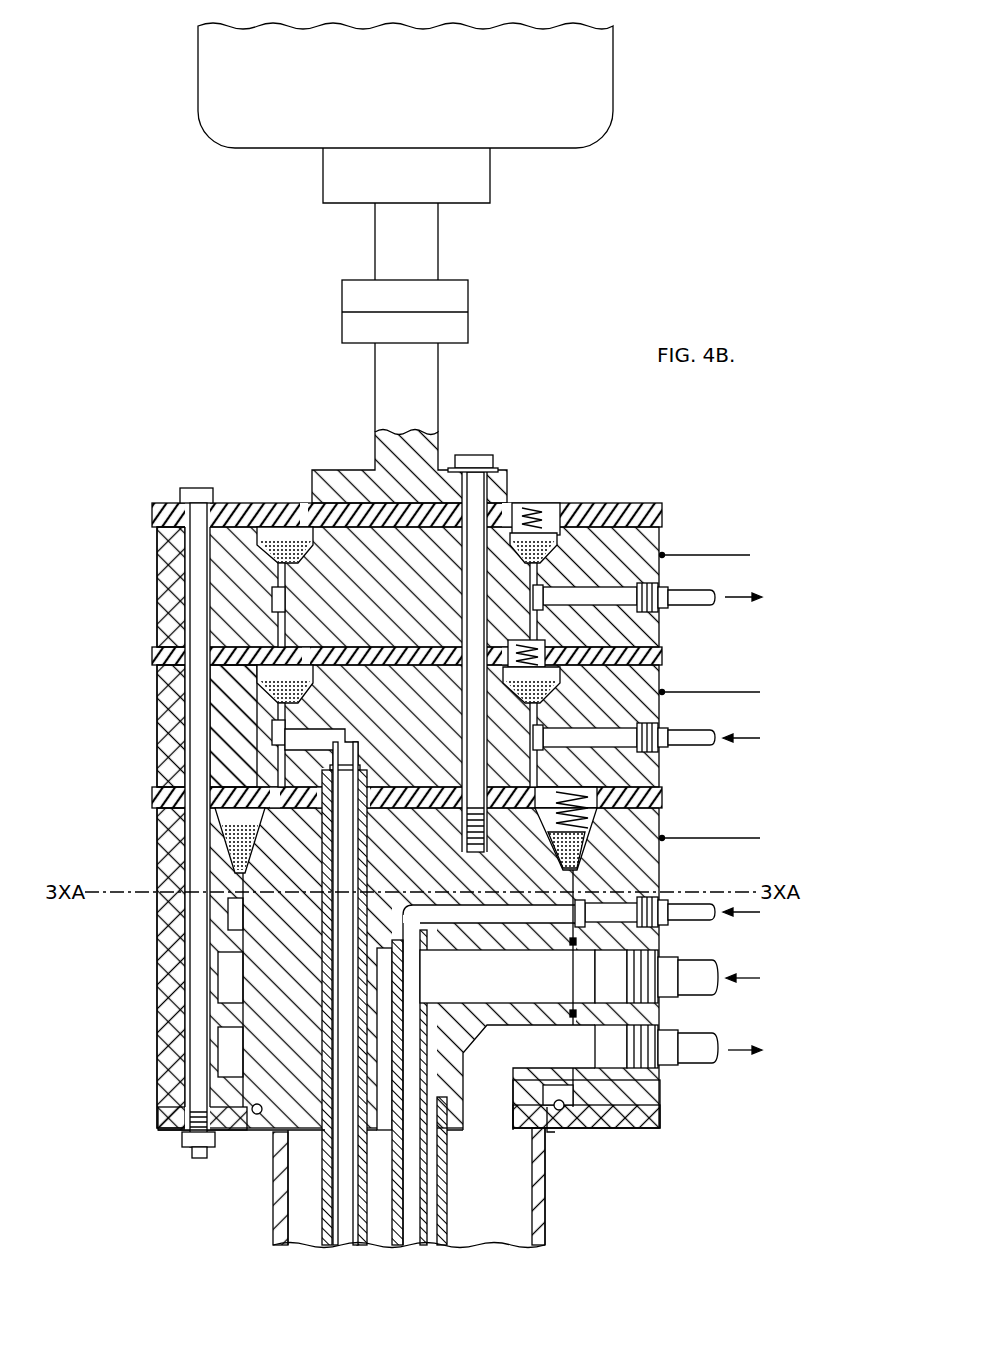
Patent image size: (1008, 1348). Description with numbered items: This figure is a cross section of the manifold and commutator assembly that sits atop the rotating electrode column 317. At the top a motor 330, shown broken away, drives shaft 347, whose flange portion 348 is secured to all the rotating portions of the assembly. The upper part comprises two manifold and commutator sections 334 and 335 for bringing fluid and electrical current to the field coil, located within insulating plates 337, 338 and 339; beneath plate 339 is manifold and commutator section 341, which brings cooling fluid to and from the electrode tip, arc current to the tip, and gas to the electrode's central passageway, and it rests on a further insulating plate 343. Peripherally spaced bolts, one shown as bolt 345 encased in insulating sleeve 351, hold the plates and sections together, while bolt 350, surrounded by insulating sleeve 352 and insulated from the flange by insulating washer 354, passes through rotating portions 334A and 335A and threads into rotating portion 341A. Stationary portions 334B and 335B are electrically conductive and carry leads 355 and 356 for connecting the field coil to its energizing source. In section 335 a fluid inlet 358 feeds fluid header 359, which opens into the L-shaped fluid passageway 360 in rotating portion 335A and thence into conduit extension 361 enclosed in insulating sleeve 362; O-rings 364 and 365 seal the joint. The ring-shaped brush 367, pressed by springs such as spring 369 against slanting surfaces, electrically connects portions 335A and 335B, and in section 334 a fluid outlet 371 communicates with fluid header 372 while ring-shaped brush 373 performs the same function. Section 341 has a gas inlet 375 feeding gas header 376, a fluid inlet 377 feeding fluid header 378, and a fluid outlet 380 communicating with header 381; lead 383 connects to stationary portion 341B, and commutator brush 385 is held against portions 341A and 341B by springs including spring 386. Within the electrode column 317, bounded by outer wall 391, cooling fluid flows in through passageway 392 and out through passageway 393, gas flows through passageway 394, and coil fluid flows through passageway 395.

The motor 330 is at (600, 82).
The shaft 347 is at (400, 385).
The flange portion 348 is at (345, 480).
The bolt 350 is at (472, 455).
The insulating washer 354 is at (498, 472).
The bolt 345 is at (198, 490).
The insulating sleeve 351 is at (210, 545).
The insulating plate 337 is at (152, 515).
The insulating plate 338 is at (152, 655).
The insulating plate 339 is at (152, 797).
The manifold and commutator section 334 is at (168, 572).
The rotating portion 334A is at (293, 632).
The stationary portion 334B is at (165, 545).
The manifold and commutator section 335 is at (168, 725).
The rotating portion 335A is at (285, 707).
The stationary portion 335B is at (165, 752).
The insulating sleeve 352 is at (470, 718).
The L-shaped fluid passageway 360 is at (340, 742).
The O-ring 364 is at (280, 708).
The O-ring 365 is at (278, 762).
The conduit extension 361 is at (360, 830).
The insulating sleeve 362 is at (360, 864).
The manifold and commutator section 341 is at (165, 947).
The rotating portion 341A is at (250, 1005).
The stationary portion 341B is at (170, 913).
The insulating plate 343 is at (162, 1117).
The ring-shaped brush 373 is at (542, 523).
The fluid header 372 is at (553, 593).
The spring 369 is at (540, 650).
The commutator ring-shaped brush 367 is at (553, 687).
The fluid header 359 is at (553, 742).
The fluid outlet 371 is at (607, 588).
The fluid inlet 358 is at (623, 735).
The lead 355 is at (712, 555).
The lead 356 is at (697, 692).
The lead 383 is at (732, 838).
The spring 386 is at (595, 828).
The ring-shaped commutator brush 385 is at (587, 847).
The gas header 376 is at (567, 890).
The gas inlet 375 is at (617, 918).
The fluid inlet 377 is at (602, 967).
The fluid header 378 is at (588, 998).
The fluid outlet 380 is at (615, 1080).
The header 381 is at (585, 1112).
The outer wall 391 is at (280, 1190).
The passageway 392 is at (433, 1155).
The passageway 393 is at (515, 1225).
The passageway 394 is at (410, 1197).
The passageway 395 is at (347, 1213).
The column portion 317 is at (538, 1188).